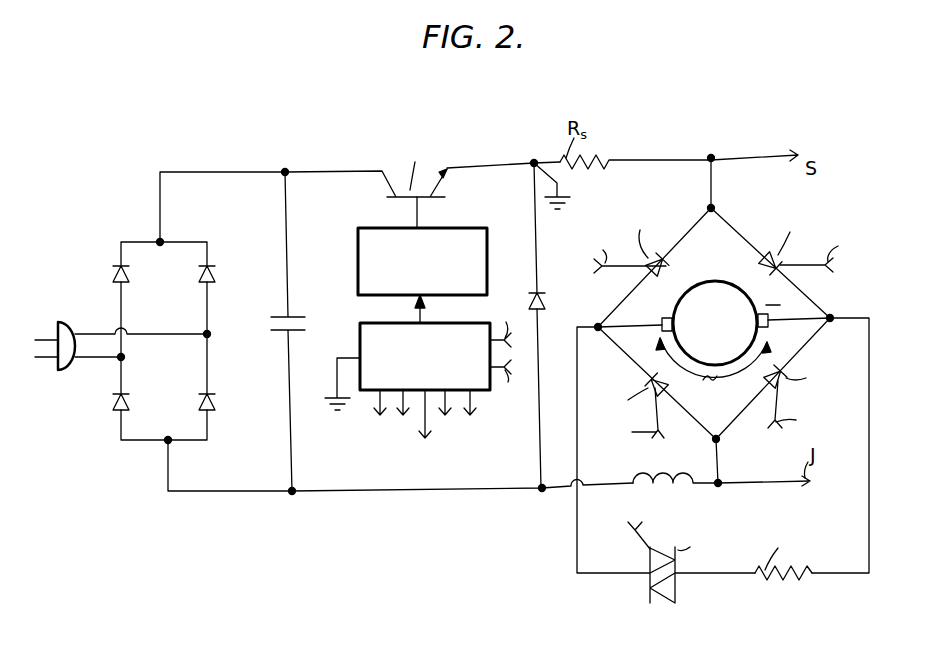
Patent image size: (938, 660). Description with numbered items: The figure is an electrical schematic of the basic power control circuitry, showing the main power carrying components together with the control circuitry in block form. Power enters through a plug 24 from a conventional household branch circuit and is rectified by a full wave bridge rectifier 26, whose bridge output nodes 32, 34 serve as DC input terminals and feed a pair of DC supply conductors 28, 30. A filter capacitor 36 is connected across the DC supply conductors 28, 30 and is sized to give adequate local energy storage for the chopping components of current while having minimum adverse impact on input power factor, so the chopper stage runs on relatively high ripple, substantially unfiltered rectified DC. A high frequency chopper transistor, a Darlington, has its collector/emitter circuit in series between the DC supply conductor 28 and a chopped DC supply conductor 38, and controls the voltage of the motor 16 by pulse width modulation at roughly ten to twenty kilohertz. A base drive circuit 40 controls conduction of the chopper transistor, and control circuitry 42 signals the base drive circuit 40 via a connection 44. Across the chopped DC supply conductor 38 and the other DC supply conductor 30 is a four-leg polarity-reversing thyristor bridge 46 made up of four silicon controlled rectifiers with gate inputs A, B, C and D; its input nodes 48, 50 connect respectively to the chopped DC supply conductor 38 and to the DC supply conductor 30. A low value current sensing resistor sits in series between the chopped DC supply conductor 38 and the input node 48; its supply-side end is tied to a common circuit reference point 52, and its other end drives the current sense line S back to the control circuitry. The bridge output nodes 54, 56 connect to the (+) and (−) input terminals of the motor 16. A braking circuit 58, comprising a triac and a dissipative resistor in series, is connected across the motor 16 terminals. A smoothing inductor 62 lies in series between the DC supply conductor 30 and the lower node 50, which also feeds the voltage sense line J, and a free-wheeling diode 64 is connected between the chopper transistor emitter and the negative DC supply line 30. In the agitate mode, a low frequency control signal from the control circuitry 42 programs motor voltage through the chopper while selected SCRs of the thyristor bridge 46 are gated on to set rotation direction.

The motor 16 is at (737, 281).
The plug 24 is at (68, 322).
The full wave bridge rectifier 26 is at (135, 228).
The DC supply conductor 28 is at (252, 171).
The DC supply conductor 30 is at (228, 493).
The bridge output node 32 is at (165, 240).
The bridge output node 34 is at (165, 443).
The filter capacitor 36 is at (280, 315).
The chopped DC supply conductor 38 is at (497, 163).
The base drive circuit 40 is at (358, 255).
The control circuitry 42 is at (360, 324).
The connection 44 is at (430, 318).
The polarity-reversing thyristor bridge 46 is at (868, 245).
The input node 48 is at (716, 205).
The input node 50 is at (722, 442).
The common circuit reference point 52 is at (333, 396).
The output node 54 is at (598, 323).
The output node 56 is at (834, 314).
The braking circuit 58 is at (615, 590).
The smoothing inductor 62 is at (634, 478).
The free-wheeling diode 64 is at (541, 296).